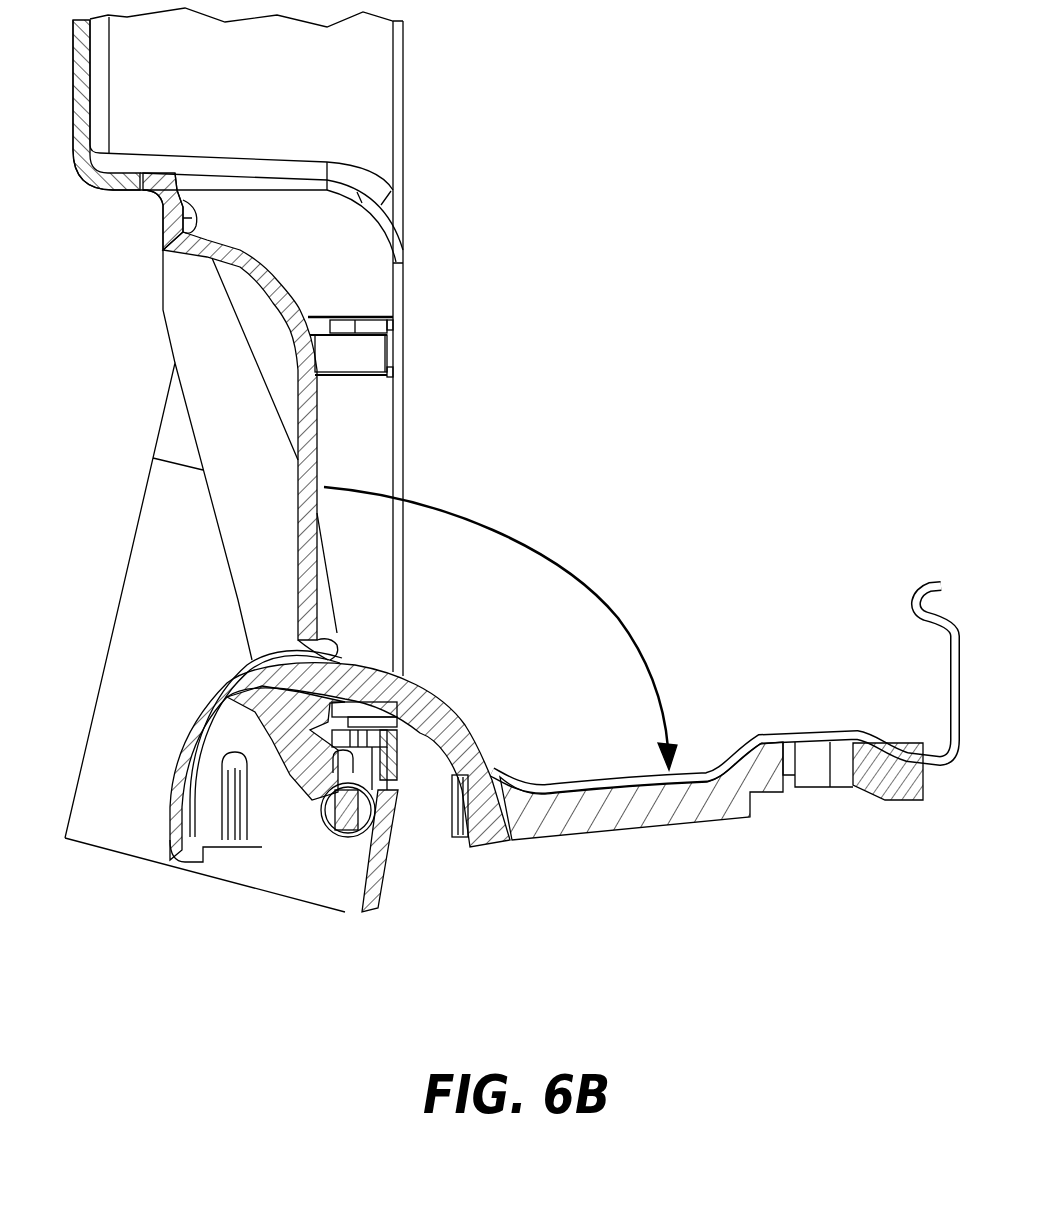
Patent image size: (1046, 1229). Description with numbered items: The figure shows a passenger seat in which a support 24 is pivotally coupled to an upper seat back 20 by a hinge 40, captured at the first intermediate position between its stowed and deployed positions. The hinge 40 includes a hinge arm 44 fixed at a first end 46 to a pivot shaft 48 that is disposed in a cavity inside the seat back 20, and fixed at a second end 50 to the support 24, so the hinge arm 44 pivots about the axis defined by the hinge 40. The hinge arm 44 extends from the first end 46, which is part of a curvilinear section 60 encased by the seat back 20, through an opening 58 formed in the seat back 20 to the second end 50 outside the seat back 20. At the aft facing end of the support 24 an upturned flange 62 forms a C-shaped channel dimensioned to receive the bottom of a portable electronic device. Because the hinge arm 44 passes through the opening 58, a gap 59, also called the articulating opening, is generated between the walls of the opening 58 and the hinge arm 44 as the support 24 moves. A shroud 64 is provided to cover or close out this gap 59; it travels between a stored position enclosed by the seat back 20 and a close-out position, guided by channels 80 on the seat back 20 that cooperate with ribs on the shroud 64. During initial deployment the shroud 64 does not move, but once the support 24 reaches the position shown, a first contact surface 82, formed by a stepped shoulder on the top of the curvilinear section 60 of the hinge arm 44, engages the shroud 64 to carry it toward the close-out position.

The seat back 20 is at (403, 100).
The support 24 is at (750, 722).
The hinge 40 is at (372, 770).
The hinge arm 44 is at (253, 690).
The first end 46 is at (340, 862).
The pivot shaft 48 is at (363, 813).
The second end 50 is at (484, 827).
The opening 58 is at (344, 644).
The gap 59 is at (329, 658).
The curvilinear section 60 is at (445, 704).
The upturned flange 62 is at (956, 665).
The shroud 64 is at (280, 717).
The channels 80 is at (228, 853).
The first contact surface 82 is at (343, 663).